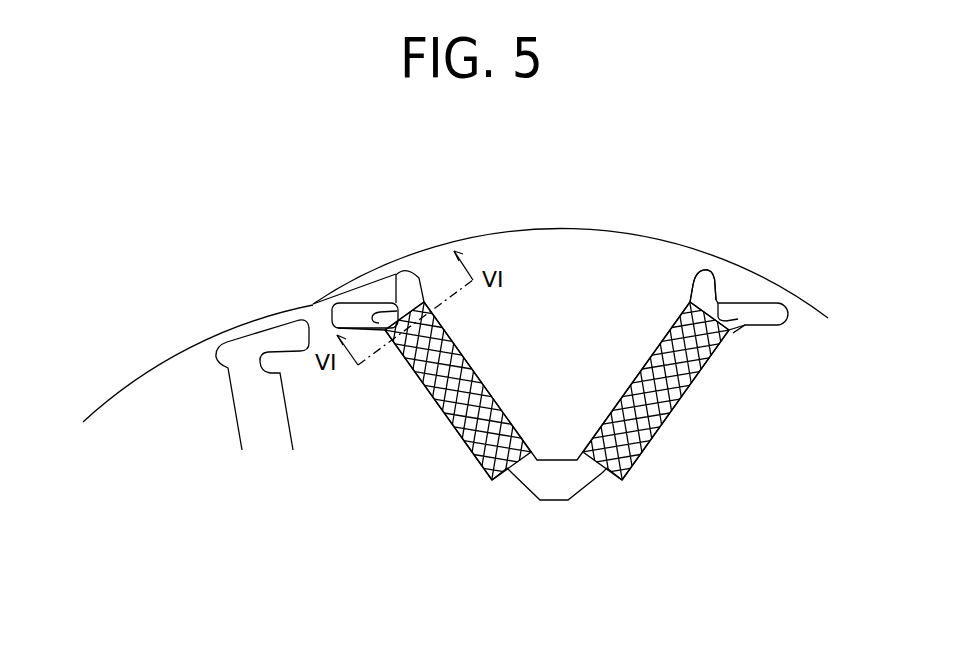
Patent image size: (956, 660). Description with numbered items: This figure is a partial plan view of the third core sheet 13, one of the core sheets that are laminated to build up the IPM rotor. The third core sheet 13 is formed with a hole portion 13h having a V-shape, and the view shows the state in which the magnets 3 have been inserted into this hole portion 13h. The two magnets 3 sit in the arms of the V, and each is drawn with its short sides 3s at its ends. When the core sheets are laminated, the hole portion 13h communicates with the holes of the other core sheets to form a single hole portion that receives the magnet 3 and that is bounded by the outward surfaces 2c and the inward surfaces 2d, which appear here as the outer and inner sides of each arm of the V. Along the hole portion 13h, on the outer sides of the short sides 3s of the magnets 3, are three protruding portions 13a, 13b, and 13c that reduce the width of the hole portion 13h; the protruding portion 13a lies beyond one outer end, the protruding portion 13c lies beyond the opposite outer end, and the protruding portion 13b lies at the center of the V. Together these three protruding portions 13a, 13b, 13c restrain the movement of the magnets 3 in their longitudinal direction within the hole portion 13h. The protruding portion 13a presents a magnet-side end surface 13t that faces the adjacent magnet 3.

The third core sheet 13 is at (74, 137).
The protruding portion 13a is at (370, 314).
The magnet-side end surface 13t is at (398, 326).
The hole portion 13h is at (715, 300).
The protruding portion 13c is at (743, 318).
The protruding portion 13b is at (562, 502).
The outward surface 2c is at (488, 373).
The inward surface 2d is at (437, 403).
The magnet 3 is at (510, 407).
The short side 3s is at (412, 322).